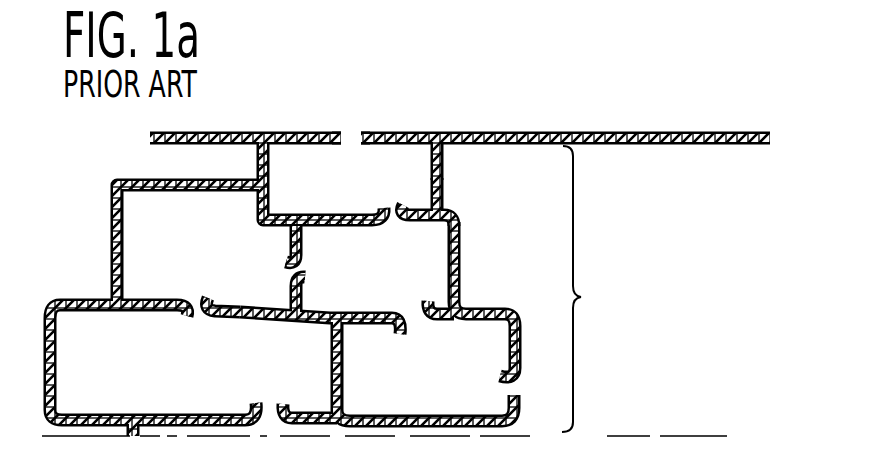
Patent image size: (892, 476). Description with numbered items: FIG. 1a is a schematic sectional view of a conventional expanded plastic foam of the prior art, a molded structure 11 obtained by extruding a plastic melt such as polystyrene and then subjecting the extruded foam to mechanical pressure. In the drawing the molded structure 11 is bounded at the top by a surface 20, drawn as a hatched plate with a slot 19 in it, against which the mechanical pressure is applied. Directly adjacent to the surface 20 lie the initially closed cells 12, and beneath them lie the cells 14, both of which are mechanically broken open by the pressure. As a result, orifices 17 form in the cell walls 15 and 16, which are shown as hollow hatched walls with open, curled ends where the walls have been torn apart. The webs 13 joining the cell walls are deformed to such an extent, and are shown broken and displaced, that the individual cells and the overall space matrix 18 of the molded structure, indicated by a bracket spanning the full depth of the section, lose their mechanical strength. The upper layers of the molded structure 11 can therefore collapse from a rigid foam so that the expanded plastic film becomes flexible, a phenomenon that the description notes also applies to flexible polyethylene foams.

The molded structure 11 is at (566, 118).
The initially closed cells 12 is at (428, 186).
The webs 13 is at (293, 262).
The cells 14 is at (137, 220).
The cell wall 15 is at (510, 352).
The cell wall 16 is at (421, 417).
The orifices 17 is at (263, 417).
The space matrix 18 is at (594, 289).
The slot 19 is at (350, 130).
The surface 20 is at (450, 132).